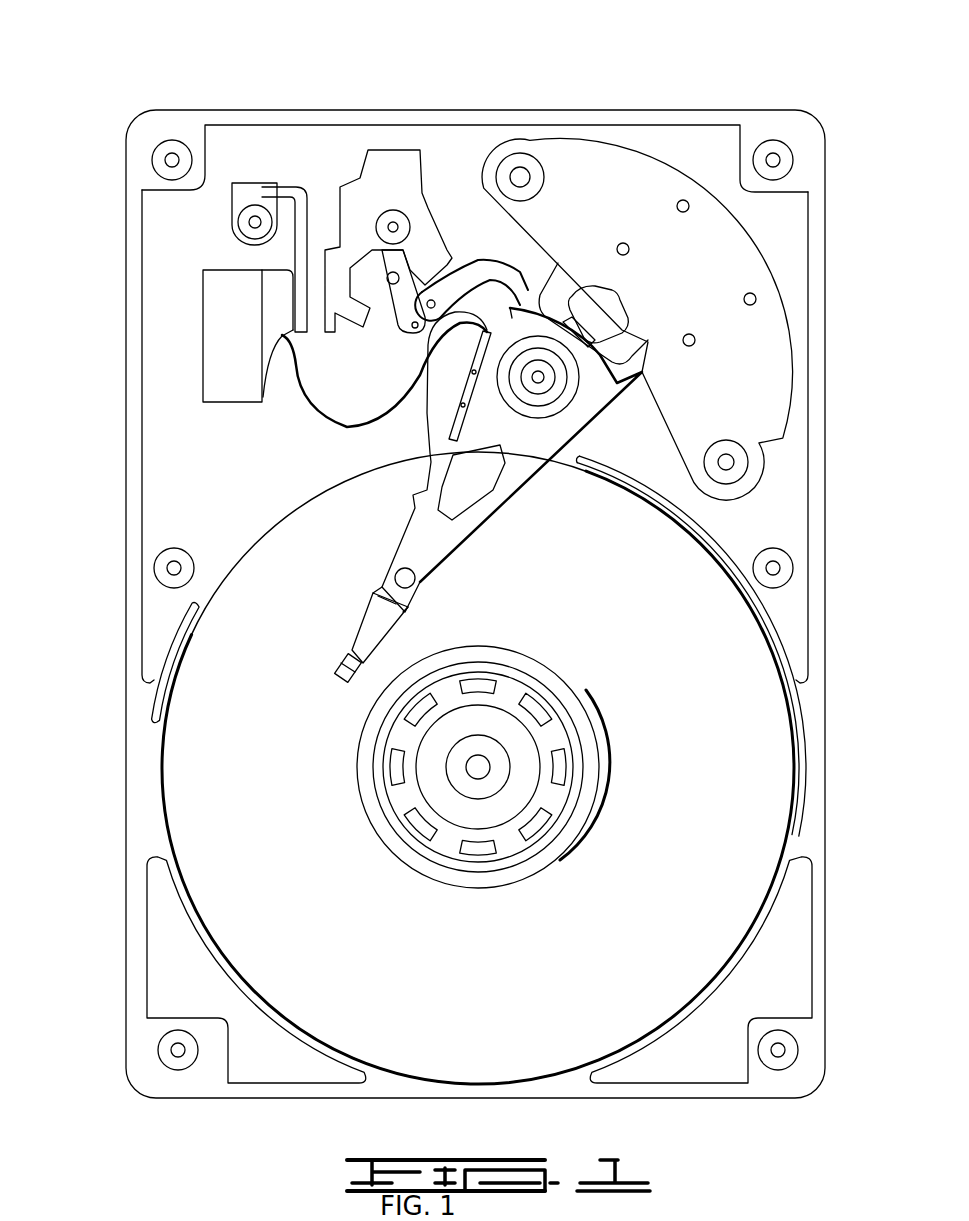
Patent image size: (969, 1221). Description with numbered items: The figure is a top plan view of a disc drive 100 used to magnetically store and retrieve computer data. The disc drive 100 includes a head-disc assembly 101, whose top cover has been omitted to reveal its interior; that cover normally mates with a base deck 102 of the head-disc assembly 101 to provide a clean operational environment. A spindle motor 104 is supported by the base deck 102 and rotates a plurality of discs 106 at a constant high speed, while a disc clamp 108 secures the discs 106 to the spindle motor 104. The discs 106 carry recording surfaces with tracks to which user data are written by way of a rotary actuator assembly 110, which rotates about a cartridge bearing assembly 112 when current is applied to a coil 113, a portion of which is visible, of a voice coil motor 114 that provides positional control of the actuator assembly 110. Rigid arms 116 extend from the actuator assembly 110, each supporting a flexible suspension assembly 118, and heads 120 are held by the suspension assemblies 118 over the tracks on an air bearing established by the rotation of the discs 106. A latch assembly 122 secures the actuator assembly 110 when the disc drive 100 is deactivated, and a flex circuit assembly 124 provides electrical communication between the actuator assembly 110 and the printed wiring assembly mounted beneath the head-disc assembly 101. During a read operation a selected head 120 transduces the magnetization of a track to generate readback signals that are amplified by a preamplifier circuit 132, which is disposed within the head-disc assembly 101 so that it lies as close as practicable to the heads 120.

The disc drive 100 is at (238, 92).
The head-disc assembly 101 is at (176, 252).
The base deck 102 is at (220, 468).
The spindle motor 104 is at (487, 793).
The discs 106 is at (720, 855).
The disc clamp 108 is at (377, 815).
The rotary actuator assembly 110 is at (513, 448).
The cartridge bearing assembly 112 is at (548, 393).
The coil 113 is at (628, 337).
The voice coil motor 114 is at (575, 213).
The rigid arms 116 is at (415, 556).
The flexible suspension assembly 118 is at (365, 635).
The heads 120 is at (338, 668).
The latch assembly 122 is at (395, 165).
The flex circuit assembly 124 is at (337, 428).
The preamplifier circuit 132 is at (467, 385).